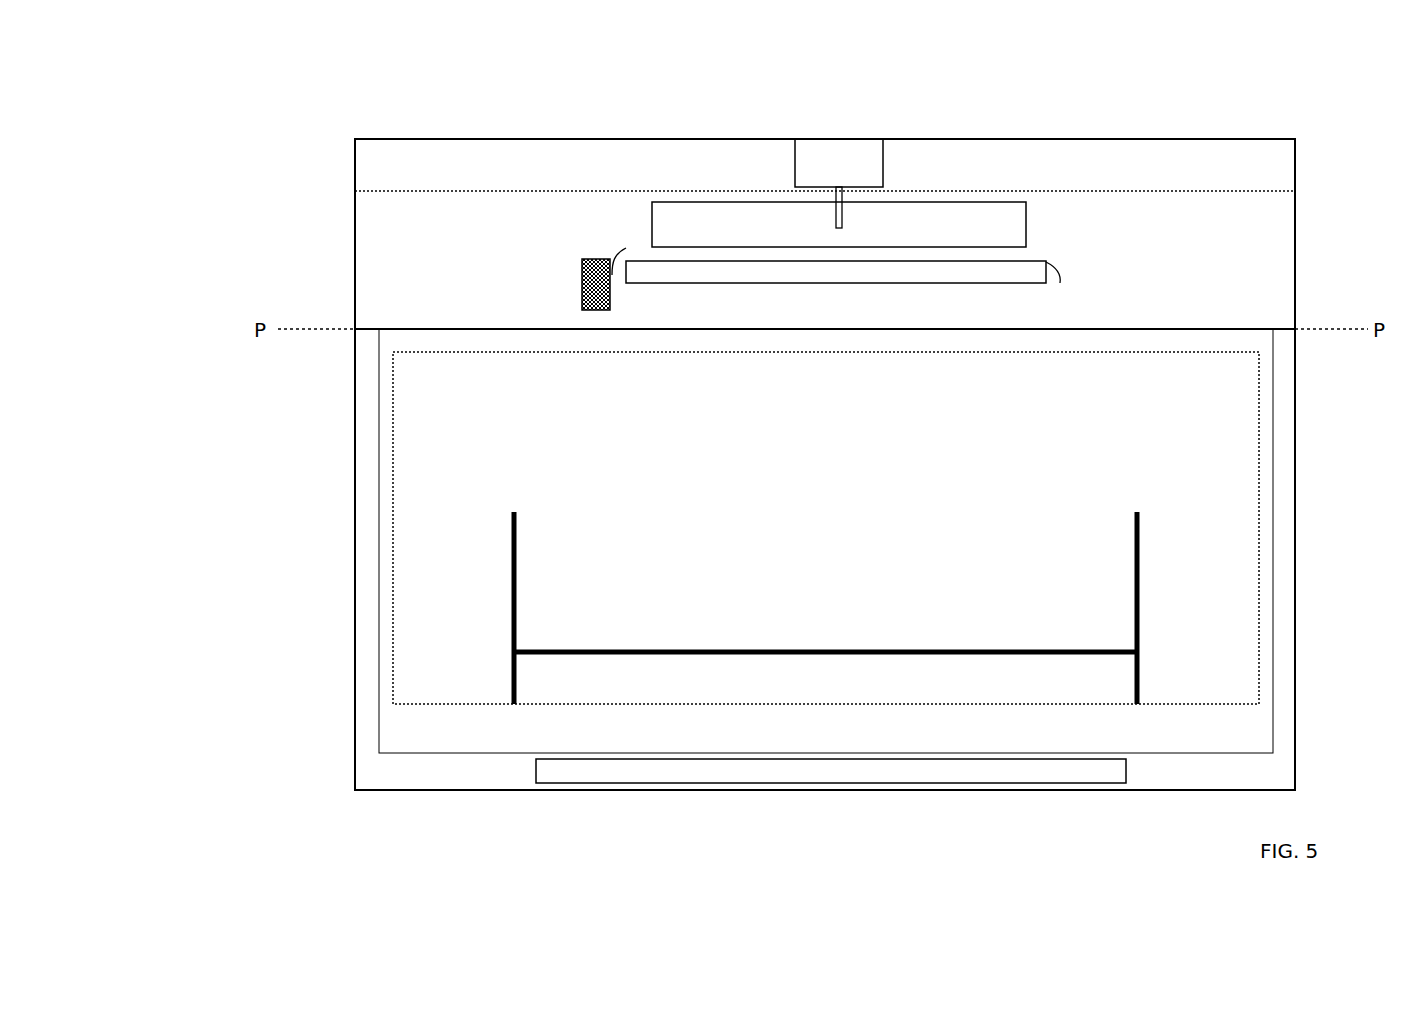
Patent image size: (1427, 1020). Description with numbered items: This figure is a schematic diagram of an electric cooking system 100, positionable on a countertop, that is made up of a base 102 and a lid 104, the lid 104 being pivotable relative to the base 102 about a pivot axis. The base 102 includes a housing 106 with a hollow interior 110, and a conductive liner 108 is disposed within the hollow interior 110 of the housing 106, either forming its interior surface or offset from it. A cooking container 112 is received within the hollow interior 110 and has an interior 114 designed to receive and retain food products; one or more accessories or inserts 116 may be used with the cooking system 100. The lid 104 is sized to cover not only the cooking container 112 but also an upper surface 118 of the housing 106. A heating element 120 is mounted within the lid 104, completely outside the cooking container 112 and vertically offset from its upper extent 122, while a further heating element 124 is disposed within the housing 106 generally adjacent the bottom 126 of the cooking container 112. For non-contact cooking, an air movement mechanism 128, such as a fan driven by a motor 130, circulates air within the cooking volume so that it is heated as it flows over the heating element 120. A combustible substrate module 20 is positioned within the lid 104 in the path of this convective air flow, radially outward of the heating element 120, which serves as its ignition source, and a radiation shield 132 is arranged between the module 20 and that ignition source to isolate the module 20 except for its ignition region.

The cooking system 100 is at (226, 192).
The base 102 is at (302, 594).
The lid 104 is at (325, 247).
The housing 106 is at (365, 501).
The liner 108 is at (382, 738).
The hollow interior 110 is at (428, 736).
The cooking container 112 is at (393, 629).
The interior 114 is at (825, 608).
The insert 116 is at (562, 655).
The upper surface 118 is at (367, 330).
The heating element 120 is at (1034, 272).
The upper extent 122 is at (1232, 352).
The heating element 124 is at (831, 771).
The bottom 126 is at (1083, 710).
The air movement mechanism 128 is at (839, 224).
The motor 130 is at (839, 183).
The radiation shield 132 is at (626, 248).
The combustible substrate module 20 is at (582, 258).